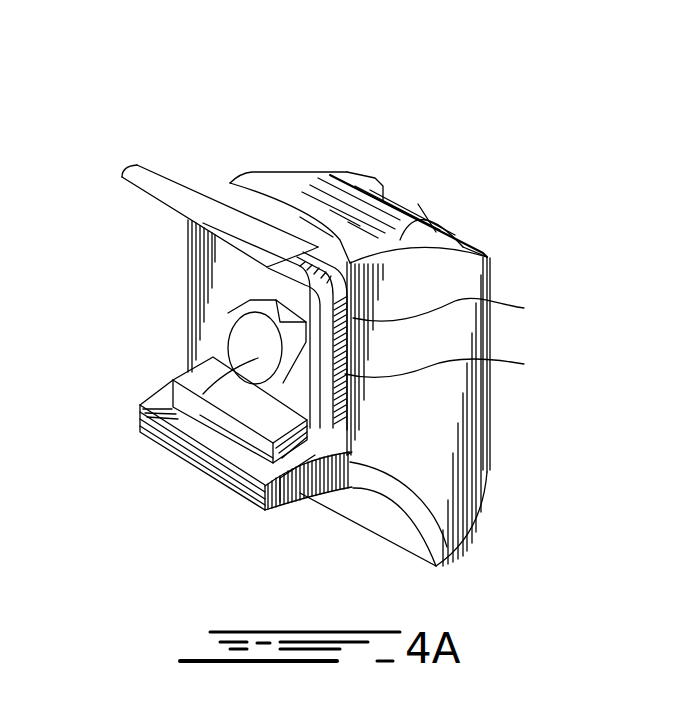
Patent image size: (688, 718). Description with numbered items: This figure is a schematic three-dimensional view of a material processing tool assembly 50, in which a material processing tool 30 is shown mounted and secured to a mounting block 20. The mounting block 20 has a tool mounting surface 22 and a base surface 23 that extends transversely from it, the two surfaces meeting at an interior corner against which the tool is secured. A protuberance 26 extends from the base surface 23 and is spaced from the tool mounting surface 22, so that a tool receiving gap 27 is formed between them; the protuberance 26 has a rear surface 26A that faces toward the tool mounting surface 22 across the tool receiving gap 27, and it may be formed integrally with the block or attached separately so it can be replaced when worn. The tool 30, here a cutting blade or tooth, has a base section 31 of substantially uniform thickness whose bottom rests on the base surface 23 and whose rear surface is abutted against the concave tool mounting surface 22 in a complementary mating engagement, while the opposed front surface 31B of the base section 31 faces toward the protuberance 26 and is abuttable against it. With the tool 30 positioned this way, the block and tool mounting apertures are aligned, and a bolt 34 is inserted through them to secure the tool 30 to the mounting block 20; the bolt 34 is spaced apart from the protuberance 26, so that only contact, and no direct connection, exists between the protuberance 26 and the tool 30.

The mounting block 20 is at (512, 445).
The material processing tool assembly 50 is at (440, 120).
The tool mounting surface 22 is at (297, 203).
The bolt 34 is at (445, 232).
The material processing tool 30 is at (160, 135).
The front surface 31B is at (204, 259).
The base section 31 is at (379, 326).
The rear surface 26A is at (230, 334).
The base surface 23 is at (200, 432).
The protuberance 26 is at (300, 455).
The tool receiving gap 27 is at (349, 453).